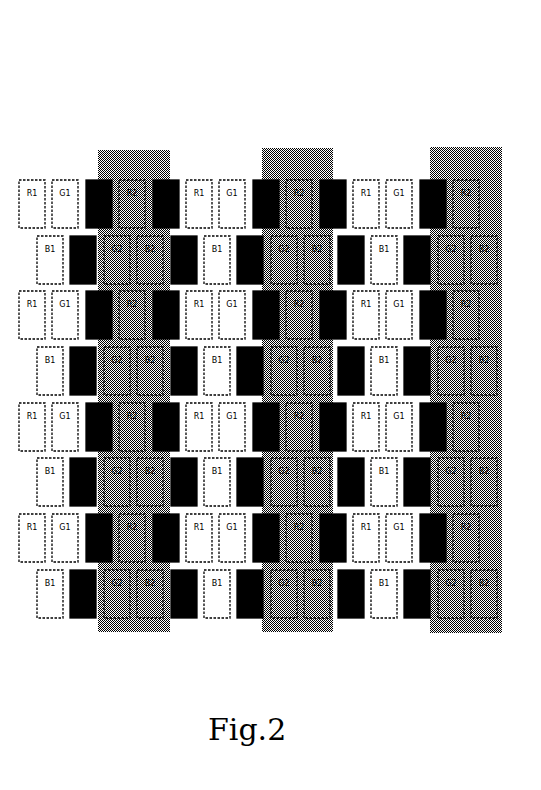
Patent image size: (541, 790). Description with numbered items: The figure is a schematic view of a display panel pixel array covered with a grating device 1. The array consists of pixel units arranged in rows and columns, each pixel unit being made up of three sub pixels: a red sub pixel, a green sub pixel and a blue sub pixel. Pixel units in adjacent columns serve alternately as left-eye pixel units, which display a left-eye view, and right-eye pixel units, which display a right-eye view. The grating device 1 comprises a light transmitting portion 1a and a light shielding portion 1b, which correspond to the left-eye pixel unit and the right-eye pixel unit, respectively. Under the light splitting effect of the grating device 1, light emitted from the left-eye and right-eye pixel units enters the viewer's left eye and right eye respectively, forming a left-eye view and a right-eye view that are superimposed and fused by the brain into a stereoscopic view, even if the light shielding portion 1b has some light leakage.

The grating device 1 is at (260, 323).
The light transmitting portion 1a is at (378, 160).
The light shielding portion 1b is at (295, 150).